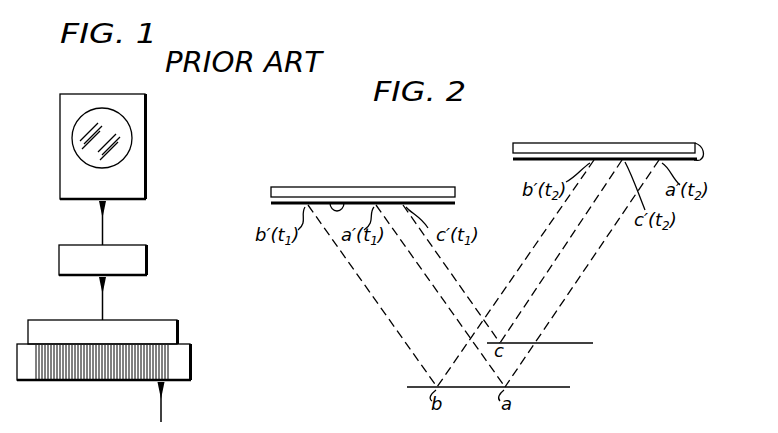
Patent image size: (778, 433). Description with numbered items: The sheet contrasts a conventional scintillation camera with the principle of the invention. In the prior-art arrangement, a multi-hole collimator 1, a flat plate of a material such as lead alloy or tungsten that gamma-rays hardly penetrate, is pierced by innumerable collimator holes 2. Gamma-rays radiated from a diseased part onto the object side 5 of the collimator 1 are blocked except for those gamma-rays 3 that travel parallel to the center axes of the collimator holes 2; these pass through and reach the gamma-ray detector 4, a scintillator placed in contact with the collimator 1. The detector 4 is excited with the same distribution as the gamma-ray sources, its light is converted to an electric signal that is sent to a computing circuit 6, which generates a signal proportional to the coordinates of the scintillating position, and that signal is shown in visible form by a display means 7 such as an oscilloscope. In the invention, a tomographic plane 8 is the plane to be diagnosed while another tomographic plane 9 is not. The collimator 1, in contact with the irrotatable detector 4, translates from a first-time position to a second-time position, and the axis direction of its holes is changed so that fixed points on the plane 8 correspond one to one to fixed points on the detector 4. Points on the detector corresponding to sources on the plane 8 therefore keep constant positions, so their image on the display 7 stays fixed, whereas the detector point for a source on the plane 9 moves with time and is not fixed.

In FIG. 1, the multi-hole collimator 1 is at (176, 362).
In FIG. 2, the multi-hole collimator 1 is at (343, 203).
In FIG. 1, the collimator holes 2 is at (100, 381).
In FIG. 1, the gamma-rays 3 is at (165, 405).
In FIG. 1, the gamma-ray detector 4 is at (172, 334).
In FIG. 2, the gamma-ray detector 4 is at (303, 187).
In FIG. 1, the object side 5 is at (90, 381).
In FIG. 1, the computing circuit 6 is at (147, 259).
In FIG. 1, the display means 7 is at (146, 141).
In FIG. 2, the tomographic plane to be diagnosed 8 is at (545, 390).
In FIG. 2, the tomographic plane not to be diagnosed 9 is at (572, 345).